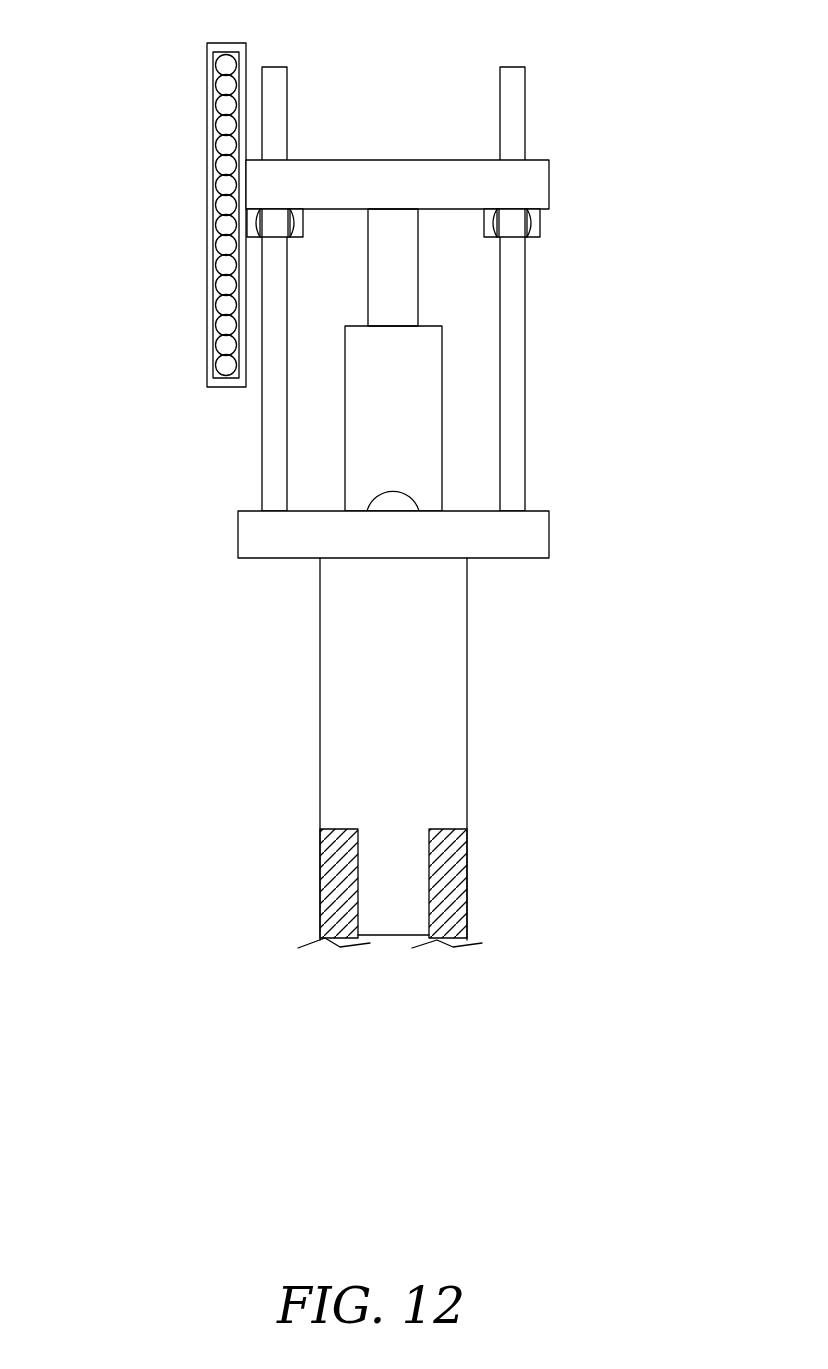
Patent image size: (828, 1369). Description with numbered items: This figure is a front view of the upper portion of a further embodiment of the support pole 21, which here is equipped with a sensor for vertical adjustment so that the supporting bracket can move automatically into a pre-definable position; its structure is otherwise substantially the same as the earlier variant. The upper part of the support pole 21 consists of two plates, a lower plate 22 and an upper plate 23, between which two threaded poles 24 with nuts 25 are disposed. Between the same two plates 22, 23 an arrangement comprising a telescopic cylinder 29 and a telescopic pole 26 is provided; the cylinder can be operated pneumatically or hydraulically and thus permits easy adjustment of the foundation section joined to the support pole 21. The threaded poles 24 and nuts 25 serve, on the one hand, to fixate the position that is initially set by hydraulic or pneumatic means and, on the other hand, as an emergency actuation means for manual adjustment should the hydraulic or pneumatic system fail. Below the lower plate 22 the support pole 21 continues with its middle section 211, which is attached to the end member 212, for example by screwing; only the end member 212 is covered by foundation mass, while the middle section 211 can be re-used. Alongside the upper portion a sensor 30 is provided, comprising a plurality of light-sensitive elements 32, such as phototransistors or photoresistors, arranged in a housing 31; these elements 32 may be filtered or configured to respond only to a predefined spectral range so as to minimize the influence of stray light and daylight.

The sensor 30 is at (183, 127).
The housing 31 is at (228, 50).
The light-sensitive elements 32 is at (228, 265).
The threaded pole 24 is at (278, 130).
The upper plate 23 is at (527, 180).
The nut 25 is at (297, 222).
The telescopic pole 26 is at (402, 277).
The telescopic cylinder 29 is at (418, 400).
The lower plate 22 is at (538, 532).
The middle section 211 is at (355, 692).
The end member 212 is at (295, 900).
The support pole 21 is at (453, 935).